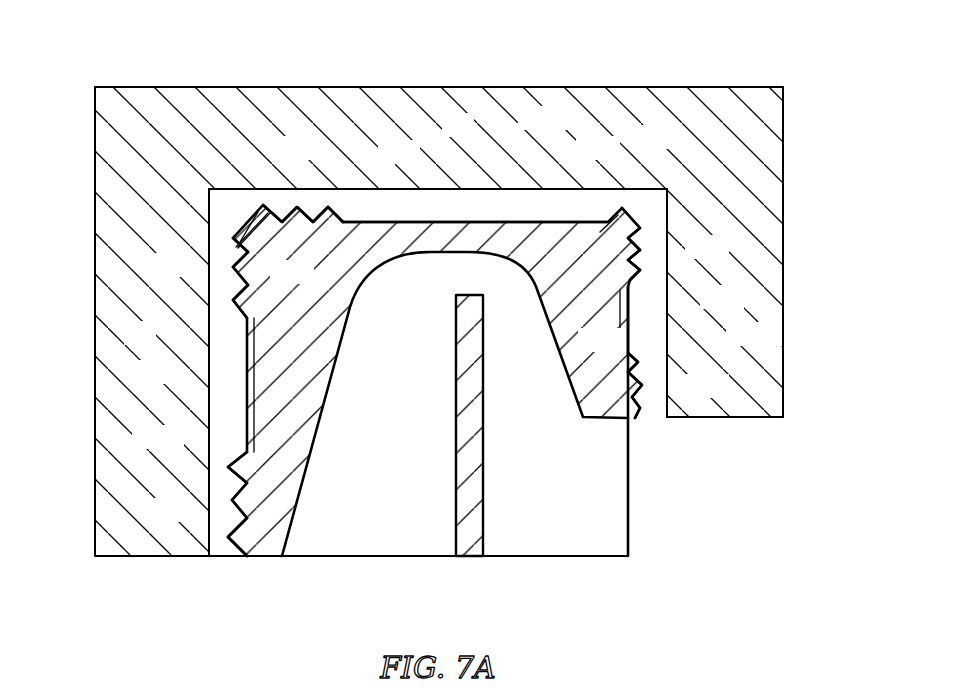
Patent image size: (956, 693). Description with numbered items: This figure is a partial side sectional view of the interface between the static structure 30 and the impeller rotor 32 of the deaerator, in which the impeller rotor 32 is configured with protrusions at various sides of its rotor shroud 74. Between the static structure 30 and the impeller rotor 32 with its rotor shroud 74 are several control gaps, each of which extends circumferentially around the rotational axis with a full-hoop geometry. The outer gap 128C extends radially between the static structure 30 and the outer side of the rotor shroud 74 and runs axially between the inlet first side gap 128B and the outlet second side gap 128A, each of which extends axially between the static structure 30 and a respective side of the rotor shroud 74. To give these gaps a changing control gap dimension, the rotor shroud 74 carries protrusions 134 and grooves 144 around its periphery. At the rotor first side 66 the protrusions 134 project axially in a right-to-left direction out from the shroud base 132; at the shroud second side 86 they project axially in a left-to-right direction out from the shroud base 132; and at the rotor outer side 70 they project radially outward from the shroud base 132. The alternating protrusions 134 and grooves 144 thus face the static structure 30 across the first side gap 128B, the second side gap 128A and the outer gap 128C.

The static structure 30 is at (530, 84).
The impeller rotor 32 is at (318, 560).
The rotor first side 66 is at (654, 430).
The rotor outer side 70 is at (470, 196).
The rotor shroud 74 is at (588, 424).
The shroud second side 86 is at (212, 330).
The second side gap 128A is at (222, 392).
The first side gap 128B is at (650, 332).
The outer gap 128C is at (518, 202).
The shroud base 132 is at (391, 221).
The protrusions 134 is at (310, 200).
The grooves 144 is at (286, 213).